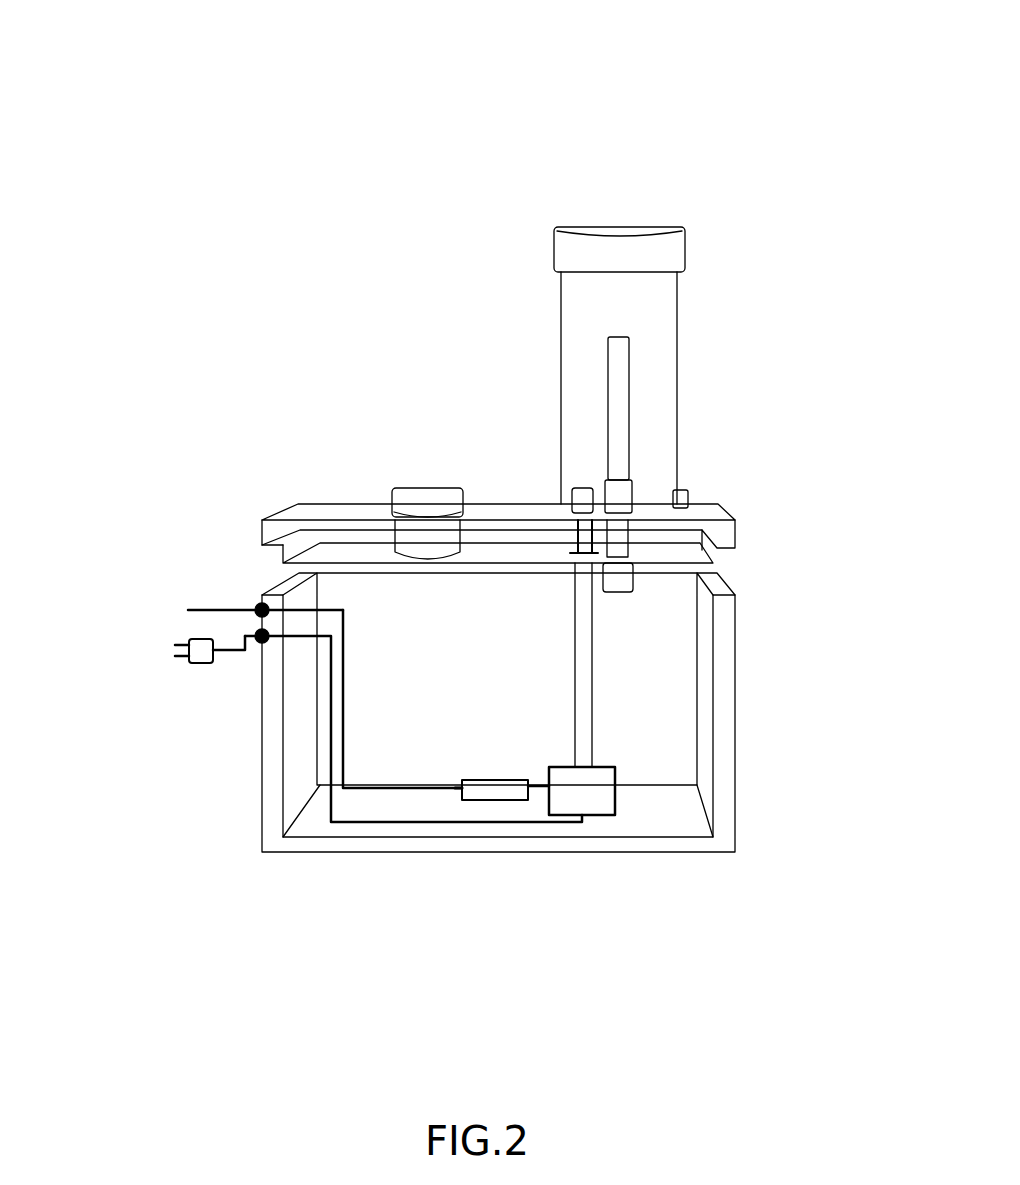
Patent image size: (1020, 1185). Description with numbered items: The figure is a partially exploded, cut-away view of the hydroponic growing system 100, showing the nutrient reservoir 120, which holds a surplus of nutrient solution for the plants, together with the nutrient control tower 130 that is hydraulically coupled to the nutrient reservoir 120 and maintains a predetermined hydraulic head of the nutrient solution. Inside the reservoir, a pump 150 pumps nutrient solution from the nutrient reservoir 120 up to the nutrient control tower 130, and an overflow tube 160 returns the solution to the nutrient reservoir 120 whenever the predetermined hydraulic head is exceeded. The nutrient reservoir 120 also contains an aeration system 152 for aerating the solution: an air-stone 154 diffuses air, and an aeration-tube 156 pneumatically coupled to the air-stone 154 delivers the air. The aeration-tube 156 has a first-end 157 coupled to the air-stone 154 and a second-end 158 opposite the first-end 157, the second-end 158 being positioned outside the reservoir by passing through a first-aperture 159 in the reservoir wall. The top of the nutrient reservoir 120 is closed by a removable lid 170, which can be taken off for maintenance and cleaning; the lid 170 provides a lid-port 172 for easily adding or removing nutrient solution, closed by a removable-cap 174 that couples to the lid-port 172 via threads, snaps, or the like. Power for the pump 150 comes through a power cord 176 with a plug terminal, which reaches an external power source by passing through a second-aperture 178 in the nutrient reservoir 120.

The hydroponic growing system 100 is at (570, 85).
The nutrient reservoir 120 is at (745, 706).
The nutrient control tower 130 is at (666, 325).
The pump 150 is at (621, 802).
The aeration system 152 is at (460, 744).
The air-stone 154 is at (487, 793).
The aeration-tube 156 is at (368, 788).
The first-end 157 is at (455, 783).
The second-end 158 is at (206, 605).
The first-aperture 159 is at (262, 603).
The overflow tube 160 is at (645, 458).
The lid 170 is at (272, 490).
The lid-port 172 is at (400, 527).
The removable-cap 174 is at (440, 486).
The power cord 176 is at (222, 658).
The second-aperture 178 is at (260, 645).